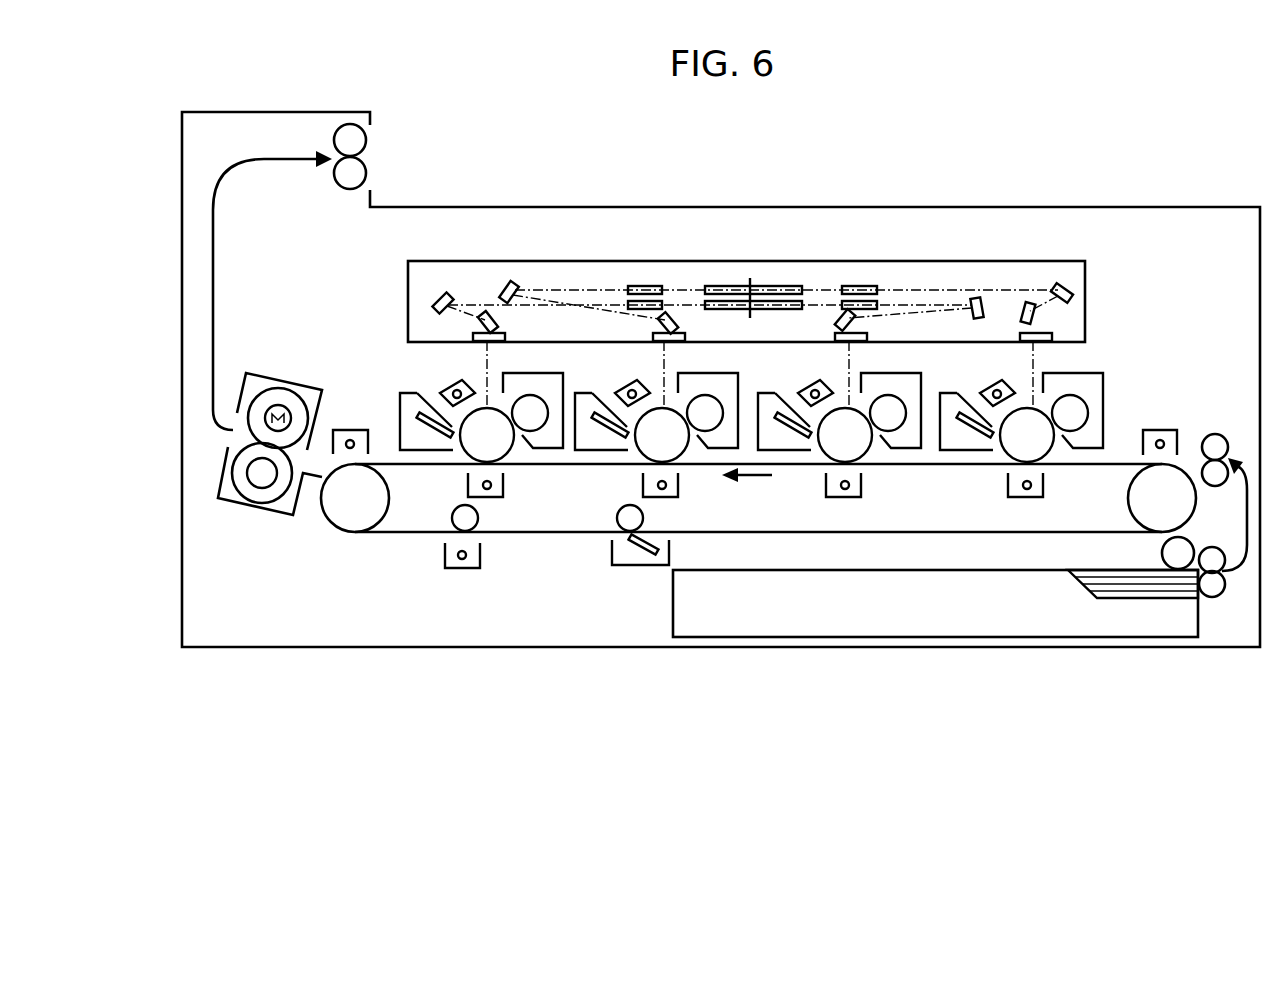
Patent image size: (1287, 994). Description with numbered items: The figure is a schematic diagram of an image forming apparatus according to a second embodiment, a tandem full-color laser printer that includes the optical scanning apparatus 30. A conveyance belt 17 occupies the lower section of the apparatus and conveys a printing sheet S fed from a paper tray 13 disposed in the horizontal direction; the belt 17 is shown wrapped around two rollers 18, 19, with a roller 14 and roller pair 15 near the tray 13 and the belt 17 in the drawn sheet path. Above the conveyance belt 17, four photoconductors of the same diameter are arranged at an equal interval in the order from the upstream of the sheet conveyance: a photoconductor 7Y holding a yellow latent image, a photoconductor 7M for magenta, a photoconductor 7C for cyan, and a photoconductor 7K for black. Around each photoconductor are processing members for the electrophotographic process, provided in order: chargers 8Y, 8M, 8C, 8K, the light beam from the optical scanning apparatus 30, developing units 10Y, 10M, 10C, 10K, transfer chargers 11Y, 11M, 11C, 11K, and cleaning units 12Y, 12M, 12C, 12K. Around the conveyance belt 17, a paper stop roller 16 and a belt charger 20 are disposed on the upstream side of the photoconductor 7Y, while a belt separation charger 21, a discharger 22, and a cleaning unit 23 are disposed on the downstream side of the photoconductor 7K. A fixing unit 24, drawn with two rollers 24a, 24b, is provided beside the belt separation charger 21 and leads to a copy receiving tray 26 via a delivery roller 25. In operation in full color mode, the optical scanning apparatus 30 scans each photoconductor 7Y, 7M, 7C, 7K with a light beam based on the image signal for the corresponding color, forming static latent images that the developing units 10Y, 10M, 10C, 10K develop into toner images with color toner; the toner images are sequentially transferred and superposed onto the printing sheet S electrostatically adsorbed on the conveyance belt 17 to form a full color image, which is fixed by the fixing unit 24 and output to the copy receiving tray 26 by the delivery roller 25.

The photoconductor 7K is at (485, 408).
The photoconductor 7C is at (659, 408).
The photoconductor 7M is at (842, 408).
The photoconductor 7Y is at (1025, 408).
The charger 8K is at (448, 380).
The charger 8C is at (622, 380).
The charger 8M is at (805, 380).
The charger 8Y is at (988, 380).
The developing unit 10K is at (537, 399).
The developing unit 10C is at (712, 399).
The developing unit 10M is at (896, 399).
The developing unit 10Y is at (1077, 399).
The transfer charger 11K is at (511, 486).
The transfer charger 11C is at (686, 486).
The transfer charger 11M is at (869, 486).
The transfer charger 11Y is at (1050, 486).
The cleaning unit 12K is at (427, 447).
The cleaning unit 12C is at (602, 447).
The cleaning unit 12M is at (785, 447).
The cleaning unit 12Y is at (967, 447).
The paper tray 13 is at (673, 600).
The feed roller 14 is at (1162, 555).
The conveyance roller pair 15 is at (1214, 548).
The paper stop roller 16 is at (1217, 434).
The conveyance belt 17 is at (860, 534).
The belt drive roller 18 is at (389, 503).
The belt tension roller 19 is at (1128, 503).
The belt charger 20 is at (1163, 430).
The belt separation charger 21 is at (355, 430).
The discharger 22 is at (463, 568).
The cleaning unit 23 is at (612, 550).
The fixing unit 24 is at (270, 455).
The fixing roller 24a is at (282, 405).
The pressure roller 24b is at (255, 494).
The delivery roller 25 is at (376, 148).
The copy receiving tray 26 is at (708, 207).
The optical scanning apparatus 30 is at (985, 261).
The recording sheet S is at (1096, 570).